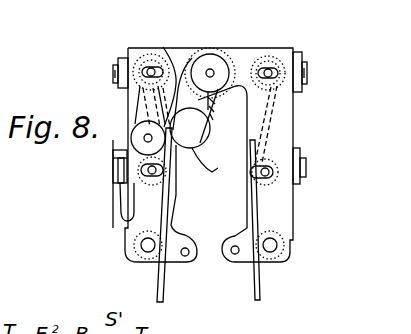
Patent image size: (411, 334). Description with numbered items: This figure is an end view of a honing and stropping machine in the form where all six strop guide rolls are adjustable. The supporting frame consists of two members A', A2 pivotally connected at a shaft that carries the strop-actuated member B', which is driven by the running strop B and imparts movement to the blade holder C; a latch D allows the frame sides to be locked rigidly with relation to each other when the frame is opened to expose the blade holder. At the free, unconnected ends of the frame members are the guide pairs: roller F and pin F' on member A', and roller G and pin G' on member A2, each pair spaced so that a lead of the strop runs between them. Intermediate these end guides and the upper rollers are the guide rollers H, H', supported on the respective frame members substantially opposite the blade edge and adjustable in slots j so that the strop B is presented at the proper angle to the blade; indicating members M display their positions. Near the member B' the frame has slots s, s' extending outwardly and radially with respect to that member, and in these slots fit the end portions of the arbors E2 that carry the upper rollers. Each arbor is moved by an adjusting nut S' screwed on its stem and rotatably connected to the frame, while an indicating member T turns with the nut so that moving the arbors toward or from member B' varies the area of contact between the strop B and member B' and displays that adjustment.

The frame member A' is at (236, 154).
The frame member A2 is at (132, 113).
The indicating member T is at (123, 55).
The adjusting nut S' is at (214, 61).
The arbor E2 is at (317, 98).
The slot s' is at (159, 54).
The slot s is at (274, 57).
The strop-actuated member B' is at (221, 54).
The blade holder C is at (208, 115).
The guide roller H is at (227, 124).
The guide roller H' is at (119, 193).
The slot j is at (248, 170).
The latch D is at (124, 212).
The indicating member M is at (302, 190).
The guide roller G is at (132, 262).
The guide pin G' is at (189, 271).
The guide roller F is at (281, 262).
The guide pin F' is at (228, 272).
The strop B is at (208, 228).